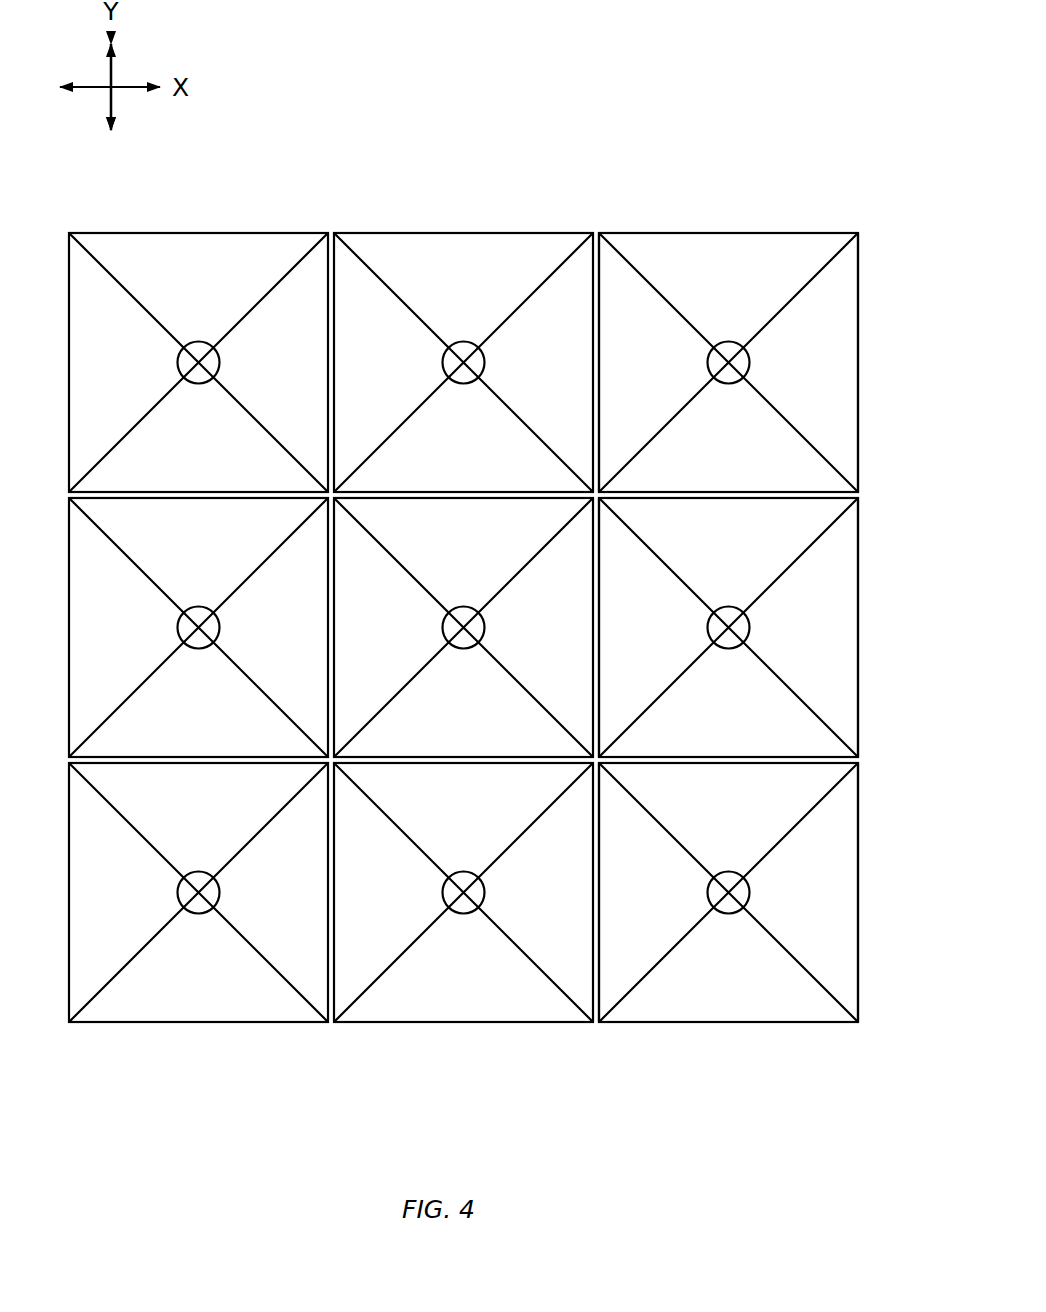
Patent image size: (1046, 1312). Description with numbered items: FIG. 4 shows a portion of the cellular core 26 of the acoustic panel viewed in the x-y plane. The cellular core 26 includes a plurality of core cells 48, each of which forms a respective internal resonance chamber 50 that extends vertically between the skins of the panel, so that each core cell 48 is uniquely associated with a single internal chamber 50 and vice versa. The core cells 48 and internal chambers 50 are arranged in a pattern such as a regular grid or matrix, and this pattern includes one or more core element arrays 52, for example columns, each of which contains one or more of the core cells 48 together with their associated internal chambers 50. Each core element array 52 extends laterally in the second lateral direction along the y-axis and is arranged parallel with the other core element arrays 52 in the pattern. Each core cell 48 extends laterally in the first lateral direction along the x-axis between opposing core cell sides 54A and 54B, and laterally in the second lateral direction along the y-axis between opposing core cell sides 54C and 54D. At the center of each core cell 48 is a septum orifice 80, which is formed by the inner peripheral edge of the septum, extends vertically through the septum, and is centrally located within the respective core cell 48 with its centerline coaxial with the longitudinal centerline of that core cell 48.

The cellular core 26 is at (649, 100).
The core cell 48 is at (296, 228).
The internal chamber 50 is at (165, 263).
The core element array 52 is at (230, 200).
The core cell side 54A is at (598, 345).
The core cell side 54B is at (860, 335).
The core cell side 54C is at (703, 499).
The core cell side 54D is at (767, 232).
The septum orifice 80 is at (197, 363).